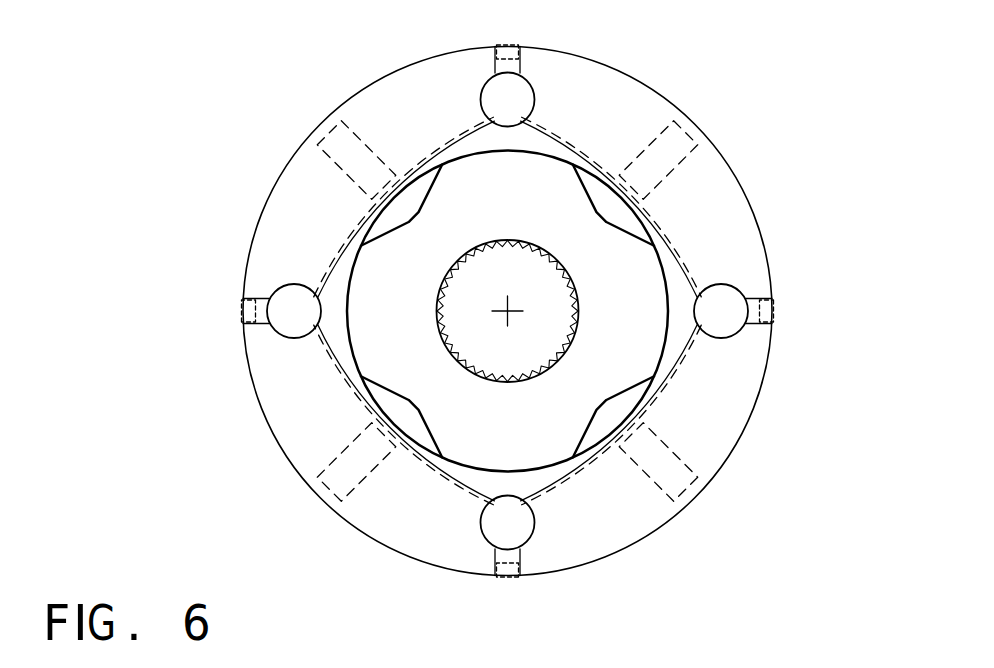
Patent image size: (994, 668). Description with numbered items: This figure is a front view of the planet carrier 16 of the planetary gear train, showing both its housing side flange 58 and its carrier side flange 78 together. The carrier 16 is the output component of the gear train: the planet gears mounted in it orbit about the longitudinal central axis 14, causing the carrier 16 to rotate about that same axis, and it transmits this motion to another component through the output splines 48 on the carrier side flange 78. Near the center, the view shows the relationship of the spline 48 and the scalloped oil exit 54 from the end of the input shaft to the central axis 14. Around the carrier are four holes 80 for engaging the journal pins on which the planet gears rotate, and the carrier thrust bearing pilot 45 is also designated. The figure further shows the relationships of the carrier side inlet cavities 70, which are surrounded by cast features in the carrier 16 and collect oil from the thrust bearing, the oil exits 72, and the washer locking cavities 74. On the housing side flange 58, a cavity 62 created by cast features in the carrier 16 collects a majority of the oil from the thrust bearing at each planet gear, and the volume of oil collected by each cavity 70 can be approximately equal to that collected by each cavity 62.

The longitudinal central axis 14 is at (511, 308).
The planet carrier 16 is at (748, 489).
The carrier thrust bearing pilot 45 is at (421, 221).
The output splines 48 is at (447, 348).
The scalloped oil exit 54 is at (438, 321).
The housing side flange 58 is at (455, 549).
The cavity 62 is at (566, 135).
The carrier side inlet cavity 70 is at (512, 153).
The oil exit 72 is at (510, 61).
The washer locking cavity 74 is at (508, 52).
The carrier side flange 78 is at (524, 431).
The hole 80 is at (534, 92).